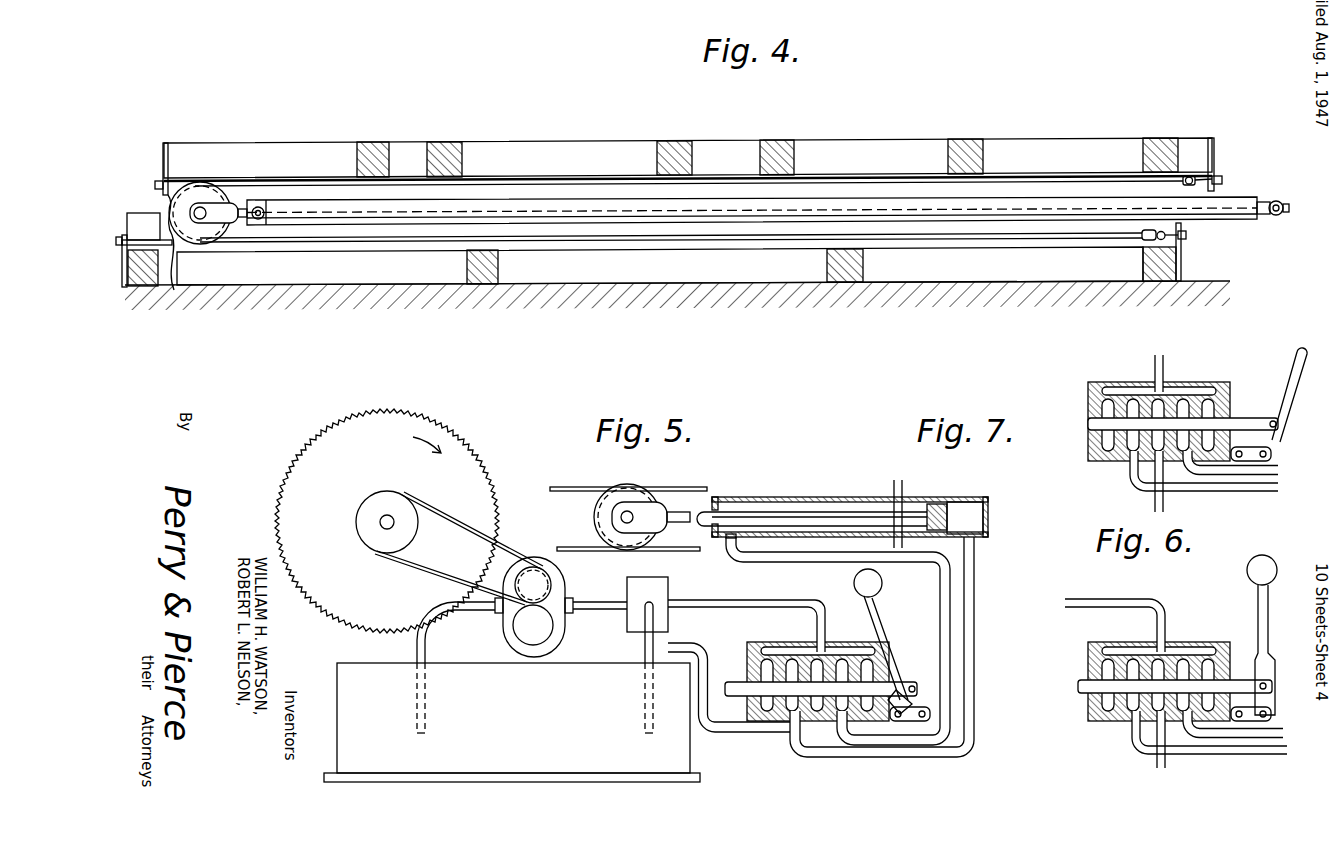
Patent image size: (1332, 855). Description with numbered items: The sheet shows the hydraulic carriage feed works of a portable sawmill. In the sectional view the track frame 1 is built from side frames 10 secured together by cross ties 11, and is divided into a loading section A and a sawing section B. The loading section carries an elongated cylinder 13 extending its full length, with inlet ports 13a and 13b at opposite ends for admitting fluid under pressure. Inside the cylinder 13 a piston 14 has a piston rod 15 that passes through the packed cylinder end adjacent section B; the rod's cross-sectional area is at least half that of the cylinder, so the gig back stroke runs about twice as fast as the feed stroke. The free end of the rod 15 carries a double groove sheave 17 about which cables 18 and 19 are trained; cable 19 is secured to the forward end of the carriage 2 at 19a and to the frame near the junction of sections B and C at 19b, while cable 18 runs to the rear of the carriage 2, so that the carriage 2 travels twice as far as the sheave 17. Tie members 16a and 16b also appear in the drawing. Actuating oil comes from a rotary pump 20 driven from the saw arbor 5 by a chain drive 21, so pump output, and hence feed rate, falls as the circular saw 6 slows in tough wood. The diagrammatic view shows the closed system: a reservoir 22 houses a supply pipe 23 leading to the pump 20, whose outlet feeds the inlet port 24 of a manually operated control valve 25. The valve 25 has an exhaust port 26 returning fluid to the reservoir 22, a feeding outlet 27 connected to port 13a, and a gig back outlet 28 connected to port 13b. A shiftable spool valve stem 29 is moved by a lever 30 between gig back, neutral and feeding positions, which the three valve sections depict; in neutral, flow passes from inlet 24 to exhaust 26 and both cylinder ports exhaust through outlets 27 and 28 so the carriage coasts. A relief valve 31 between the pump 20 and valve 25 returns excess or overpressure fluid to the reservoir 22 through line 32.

In FIG. 4, the track frame 1 is at (912, 262).
In FIG. 4, the carriage 2 is at (872, 150).
In FIG. 5, the saw arbor 5 is at (380, 518).
In FIG. 5, the circular rotary saw 6 is at (462, 445).
In FIG. 4, the side frames 10 is at (1075, 262).
In FIG. 4, the cross ties 11 is at (499, 266).
In FIG. 4, the cylinder 13 is at (627, 198).
In FIG. 5, the cylinder 13 is at (865, 497).
In FIG. 4, the inlet port 13a is at (1274, 201).
In FIG. 4, the inlet port 13b is at (262, 222).
In FIG. 5, the inlet port 13b is at (718, 539).
In FIG. 5, the piston 14 is at (938, 506).
In FIG. 4, the piston rod 15 is at (243, 206).
In FIG. 5, the piston rod 15 is at (807, 512).
In FIG. 4, the upper tie rod 16a is at (1190, 176).
In FIG. 4, the lower tie rod 16b is at (1147, 240).
In FIG. 4, the double groove sheave 17 is at (206, 240).
In FIG. 5, the double groove sheave 17 is at (617, 497).
In FIG. 4, the cable 18 is at (313, 238).
In FIG. 5, the cable 18 is at (673, 545).
In FIG. 4, the cable 19 is at (167, 196).
In FIG. 5, the cable 19 is at (560, 546).
In FIG. 4, the cable attachment point 19a is at (170, 180).
In FIG. 4, the cable attachment point 19b is at (173, 264).
In FIG. 5, the rotary pump 20 is at (567, 627).
In FIG. 5, the chain drive 21 is at (455, 527).
In FIG. 5, the reservoir 22 is at (512, 722).
In FIG. 5, the supply pipe 23 is at (426, 651).
In FIG. 5, the inlet port 24 is at (826, 646).
In FIG. 7, the inlet port 24 is at (1166, 382).
In FIG. 6, the inlet port 24 is at (1166, 642).
In FIG. 5, the control valve 25 is at (735, 648).
In FIG. 7, the control valve 25 is at (1090, 395).
In FIG. 6, the control valve 25 is at (1090, 652).
In FIG. 5, the exhaust port 26 is at (798, 725).
In FIG. 7, the exhaust port 26 is at (1153, 504).
In FIG. 6, the exhaust port 26 is at (1155, 767).
In FIG. 5, the feeding outlet 27 is at (762, 722).
In FIG. 7, the feeding outlet 27 is at (1100, 462).
In FIG. 6, the feeding outlet 27 is at (1128, 722).
In FIG. 5, the gig back outlet 28 is at (847, 725).
In FIG. 7, the gig back outlet 28 is at (1192, 478).
In FIG. 6, the gig back outlet 28 is at (1186, 737).
In FIG. 5, the spool valve stem 29 is at (792, 684).
In FIG. 7, the spool valve stem 29 is at (1240, 418).
In FIG. 6, the spool valve stem 29 is at (1078, 687).
In FIG. 5, the lever 30 is at (886, 621).
In FIG. 7, the lever 30 is at (1296, 366).
In FIG. 6, the lever 30 is at (1257, 603).
In FIG. 5, the relief valve 31 is at (630, 584).
In FIG. 5, the line 32 is at (646, 628).
In FIG. 4, the loading section A is at (742, 265).
In FIG. 4, the sawing section B is at (143, 290).